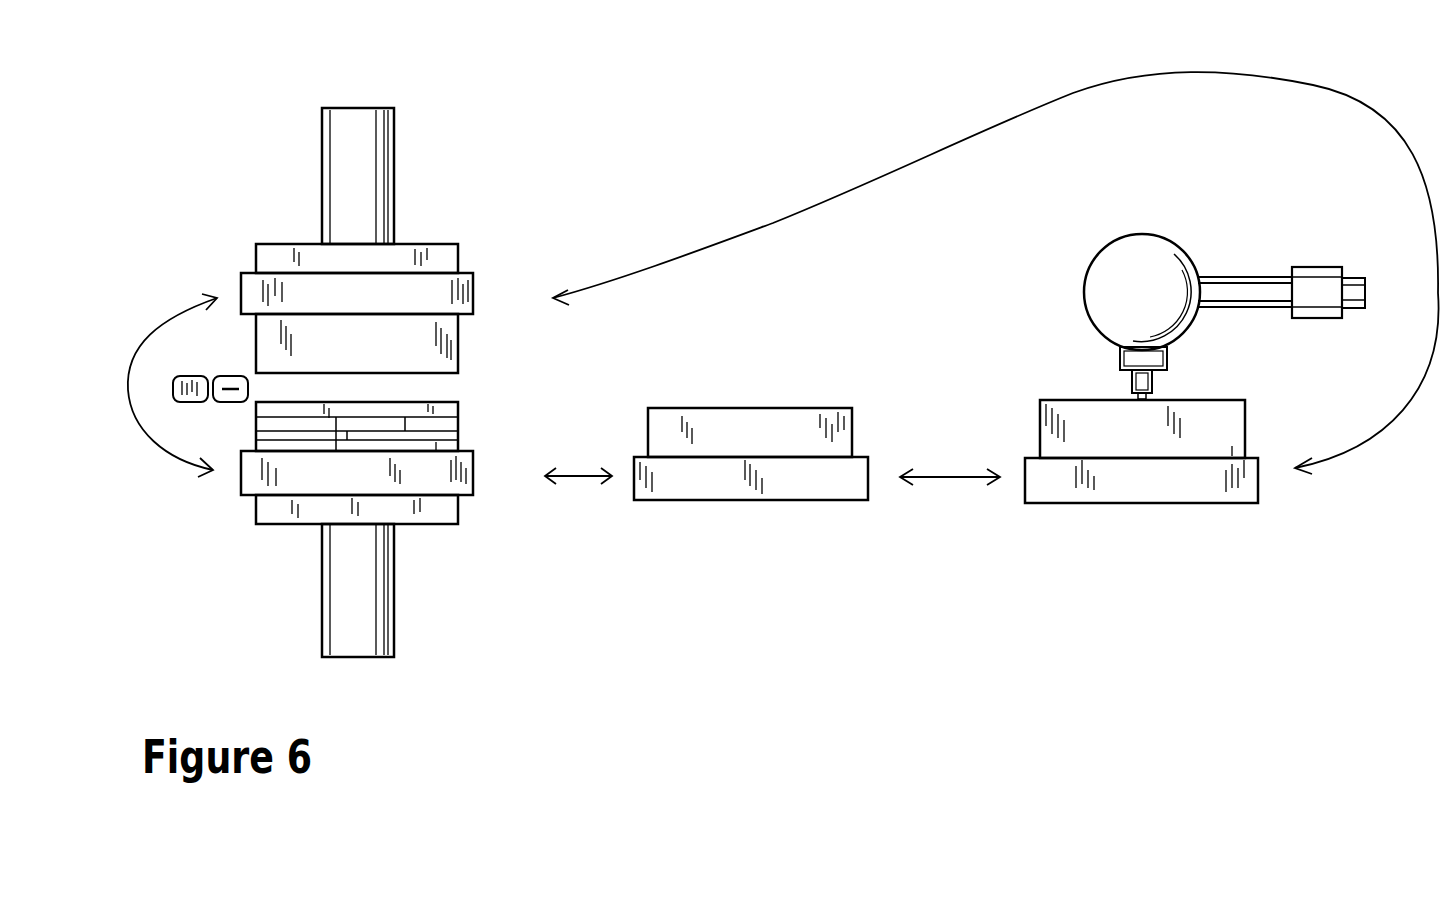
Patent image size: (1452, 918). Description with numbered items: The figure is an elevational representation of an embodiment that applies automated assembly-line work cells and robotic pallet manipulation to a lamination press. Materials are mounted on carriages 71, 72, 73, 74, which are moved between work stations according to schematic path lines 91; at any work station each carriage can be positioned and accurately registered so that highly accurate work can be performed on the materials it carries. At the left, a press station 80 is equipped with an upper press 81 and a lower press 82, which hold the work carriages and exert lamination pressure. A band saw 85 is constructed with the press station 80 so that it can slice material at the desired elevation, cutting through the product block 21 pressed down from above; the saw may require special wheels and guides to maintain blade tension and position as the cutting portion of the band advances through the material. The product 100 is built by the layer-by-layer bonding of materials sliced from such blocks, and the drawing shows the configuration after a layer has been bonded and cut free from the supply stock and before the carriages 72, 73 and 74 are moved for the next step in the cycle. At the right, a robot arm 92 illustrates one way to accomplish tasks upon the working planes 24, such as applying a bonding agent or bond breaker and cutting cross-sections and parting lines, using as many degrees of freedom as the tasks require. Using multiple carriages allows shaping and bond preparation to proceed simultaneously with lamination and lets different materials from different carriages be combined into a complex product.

The press station 80 is at (513, 137).
The upper press 81 is at (443, 252).
The carriage 71 is at (443, 302).
The product block 21 is at (460, 346).
The working planes 24 is at (712, 409).
The product 100 is at (273, 424).
The band saw 85 is at (235, 377).
The carriage 72 is at (448, 476).
The lower press 82 is at (443, 517).
The carriage 73 is at (697, 492).
The carriage 74 is at (1075, 490).
The robot arm 92 is at (1227, 273).
The schematic path lines 91 is at (181, 464).